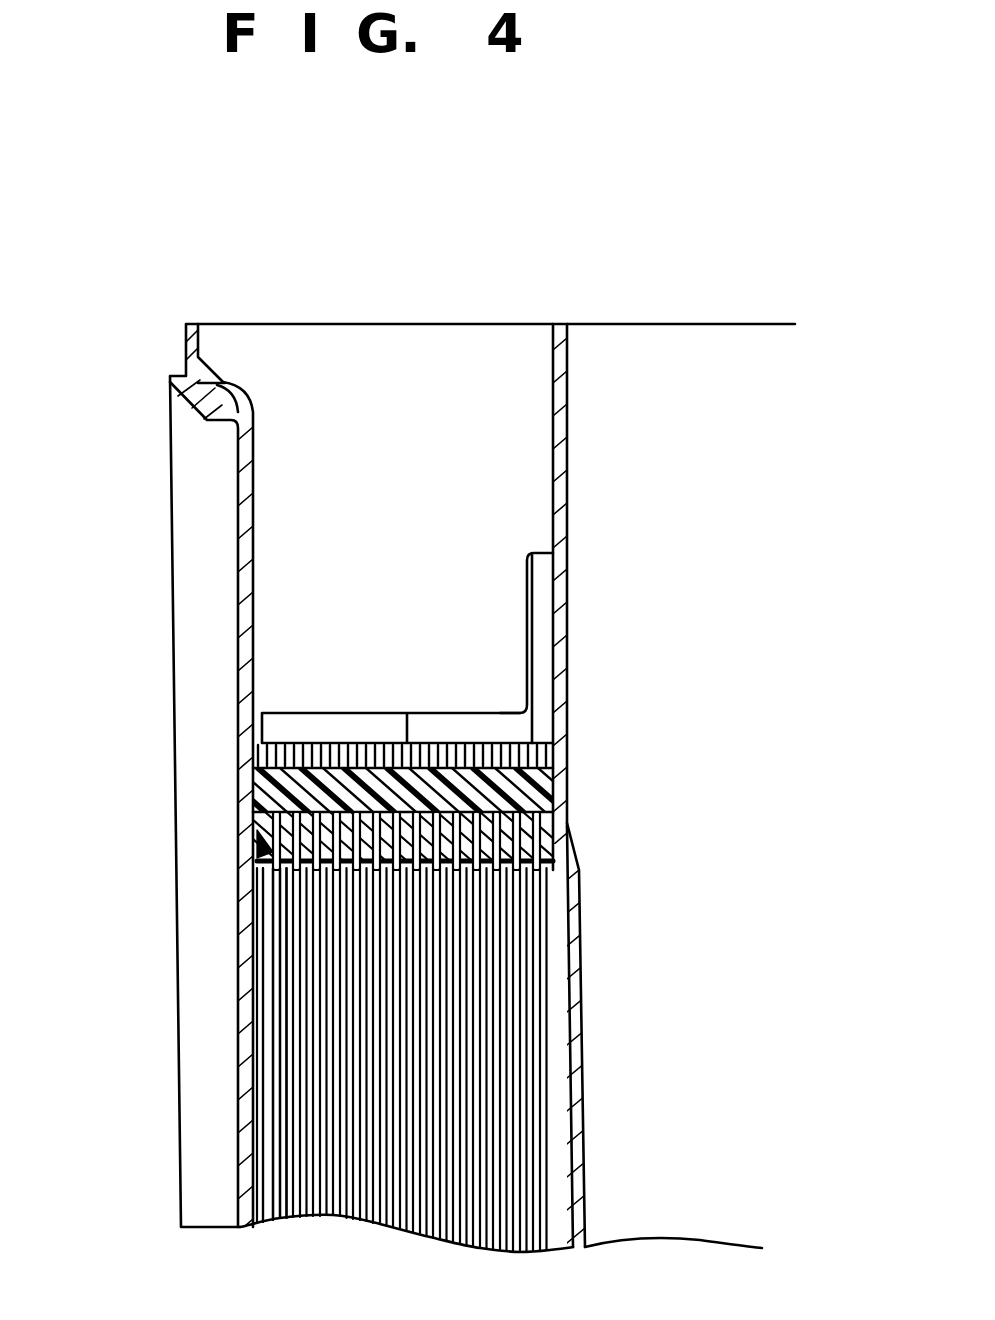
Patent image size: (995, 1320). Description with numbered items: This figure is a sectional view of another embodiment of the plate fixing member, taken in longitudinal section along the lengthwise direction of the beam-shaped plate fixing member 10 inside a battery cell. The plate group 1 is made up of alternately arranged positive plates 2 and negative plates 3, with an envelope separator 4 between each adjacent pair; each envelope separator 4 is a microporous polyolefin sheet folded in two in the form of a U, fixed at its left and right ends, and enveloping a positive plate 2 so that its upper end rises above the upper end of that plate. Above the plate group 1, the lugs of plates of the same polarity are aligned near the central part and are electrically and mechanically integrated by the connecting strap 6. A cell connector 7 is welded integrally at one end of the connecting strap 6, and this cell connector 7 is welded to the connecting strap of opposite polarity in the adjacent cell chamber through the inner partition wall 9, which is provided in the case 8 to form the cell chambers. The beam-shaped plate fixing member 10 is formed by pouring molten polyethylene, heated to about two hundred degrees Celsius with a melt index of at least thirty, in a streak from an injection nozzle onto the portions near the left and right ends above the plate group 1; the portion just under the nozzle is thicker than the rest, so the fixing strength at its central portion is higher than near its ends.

The plate group 1 is at (283, 1133).
The positive plate 2 is at (287, 1043).
The negative plate 3 is at (268, 946).
The envelope separator 4 is at (258, 850).
The connecting strap 6 is at (282, 728).
The cell connector 7 is at (542, 646).
The case 8 is at (470, 456).
The inner partition wall 9 is at (557, 365).
The beam-shaped plate fixing member 10 is at (268, 795).